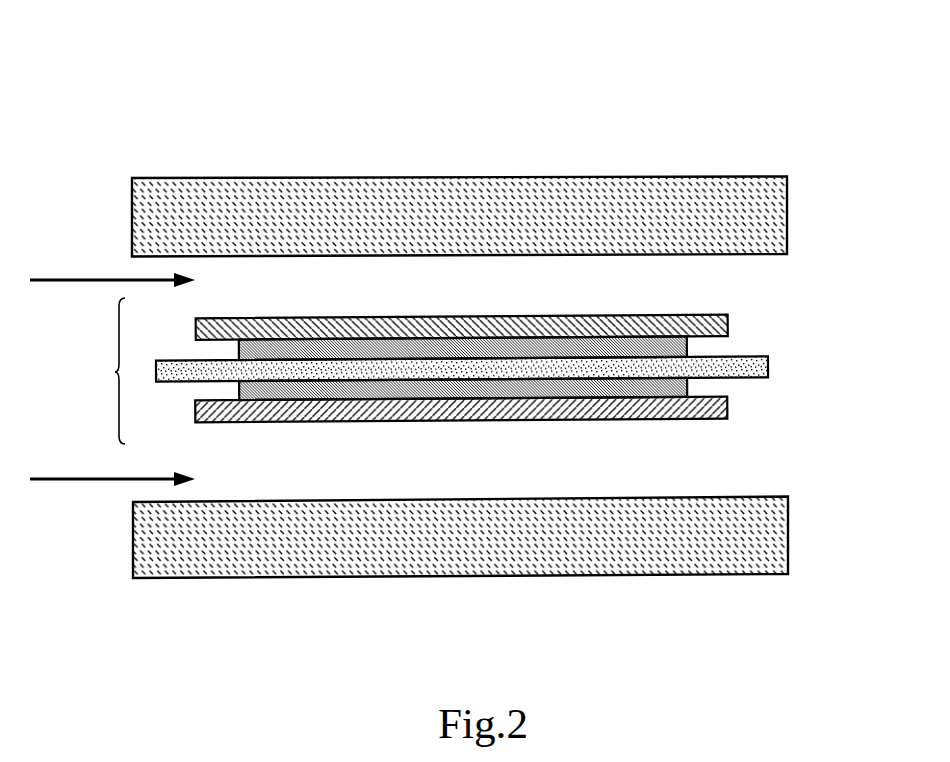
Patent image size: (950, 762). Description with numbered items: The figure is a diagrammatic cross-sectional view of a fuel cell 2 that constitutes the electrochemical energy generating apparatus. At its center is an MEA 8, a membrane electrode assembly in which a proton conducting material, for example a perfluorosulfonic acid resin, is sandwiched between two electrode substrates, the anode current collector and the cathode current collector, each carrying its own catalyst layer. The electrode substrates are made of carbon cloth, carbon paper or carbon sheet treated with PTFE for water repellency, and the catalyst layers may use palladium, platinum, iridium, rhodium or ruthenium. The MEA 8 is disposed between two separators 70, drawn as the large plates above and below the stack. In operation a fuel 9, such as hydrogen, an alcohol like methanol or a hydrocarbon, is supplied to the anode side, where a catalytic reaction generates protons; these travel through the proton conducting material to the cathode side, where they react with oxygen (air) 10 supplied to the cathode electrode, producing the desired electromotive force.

The fuel cell 2 is at (824, 103).
The MEA (membrane electrode assembly) 8 is at (109, 371).
The fuel 9 is at (112, 265).
The oxygen (air) 10 is at (112, 465).
The separators 70 is at (701, 182).